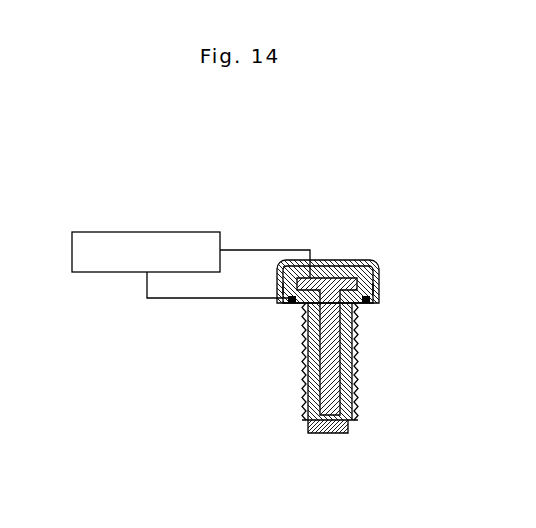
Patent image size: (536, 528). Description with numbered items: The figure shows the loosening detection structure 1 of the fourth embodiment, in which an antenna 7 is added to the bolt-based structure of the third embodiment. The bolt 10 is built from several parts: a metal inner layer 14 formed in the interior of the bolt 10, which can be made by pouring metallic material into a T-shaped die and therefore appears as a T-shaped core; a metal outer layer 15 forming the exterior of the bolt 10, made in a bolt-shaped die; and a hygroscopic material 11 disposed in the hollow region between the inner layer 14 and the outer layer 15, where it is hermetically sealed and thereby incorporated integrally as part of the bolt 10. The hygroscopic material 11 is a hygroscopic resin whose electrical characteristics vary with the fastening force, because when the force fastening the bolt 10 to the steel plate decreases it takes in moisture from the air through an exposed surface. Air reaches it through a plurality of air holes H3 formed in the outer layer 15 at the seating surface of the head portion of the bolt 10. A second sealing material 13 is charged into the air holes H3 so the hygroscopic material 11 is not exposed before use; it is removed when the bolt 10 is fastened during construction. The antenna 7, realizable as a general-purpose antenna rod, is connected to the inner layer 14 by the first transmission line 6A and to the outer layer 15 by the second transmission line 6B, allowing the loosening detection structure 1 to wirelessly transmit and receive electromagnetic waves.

The loosening detection structure 1 is at (322, 191).
The antenna 7 is at (147, 232).
The first transmission line 6A is at (247, 250).
The second transmission line 6B is at (214, 299).
The bolt 10 is at (319, 266).
The hygroscopic material 11 is at (357, 264).
The inner layer 14 is at (331, 271).
The second sealing material 13 is at (289, 304).
The outer layer 15 is at (350, 427).
The air holes H3 is at (280, 285).